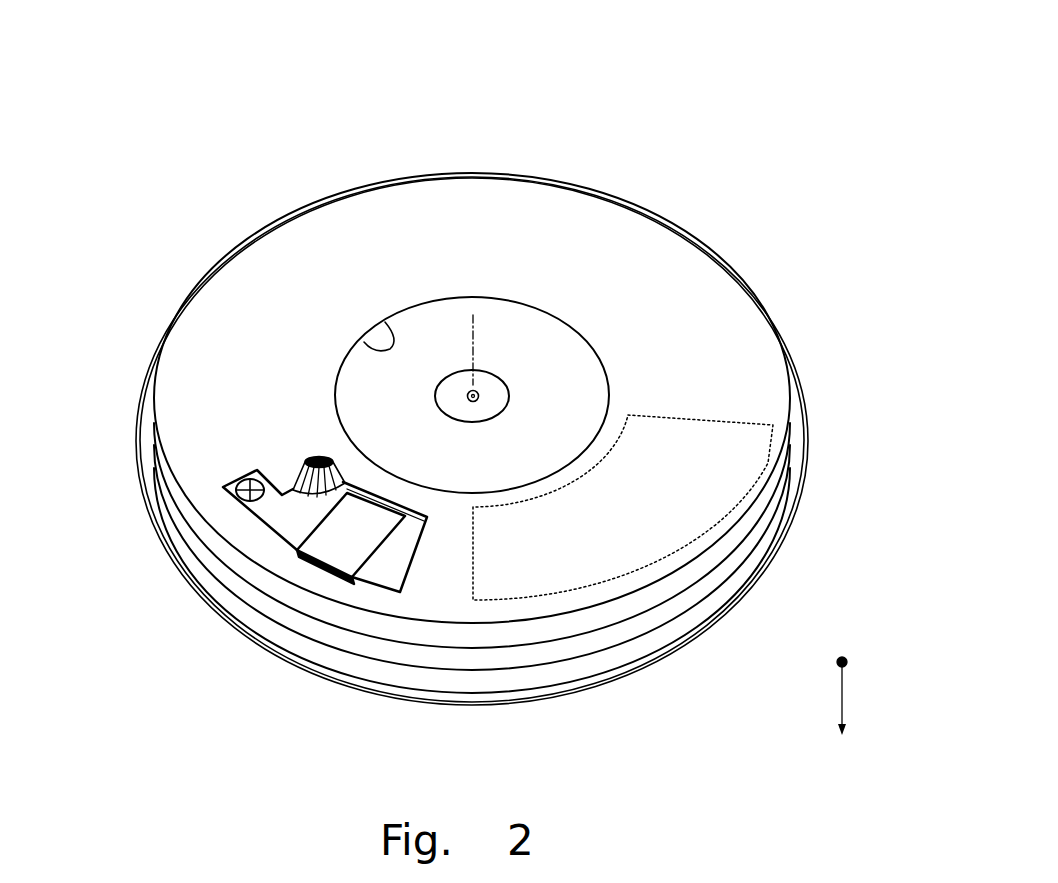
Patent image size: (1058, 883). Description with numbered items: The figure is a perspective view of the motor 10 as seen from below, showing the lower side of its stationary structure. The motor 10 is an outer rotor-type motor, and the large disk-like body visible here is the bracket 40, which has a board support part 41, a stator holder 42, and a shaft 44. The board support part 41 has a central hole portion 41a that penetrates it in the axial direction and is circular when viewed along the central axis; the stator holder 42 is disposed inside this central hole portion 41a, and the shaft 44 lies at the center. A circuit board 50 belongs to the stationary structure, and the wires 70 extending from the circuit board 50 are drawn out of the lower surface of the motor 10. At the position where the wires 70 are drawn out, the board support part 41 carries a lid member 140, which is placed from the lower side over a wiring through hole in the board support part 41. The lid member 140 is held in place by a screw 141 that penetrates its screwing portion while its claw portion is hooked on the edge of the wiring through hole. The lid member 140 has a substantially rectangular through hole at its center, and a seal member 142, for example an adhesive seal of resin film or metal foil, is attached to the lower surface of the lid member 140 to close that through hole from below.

The motor 10 is at (702, 118).
The bracket 40 is at (587, 176).
The board support part 41 is at (657, 257).
The central hole portion 41a is at (385, 322).
The stator holder 42 is at (423, 320).
The shaft 44 is at (490, 390).
The circuit board 50 is at (768, 463).
The wires 70 is at (290, 490).
The lid member 140 is at (390, 552).
The screw 141 is at (240, 483).
The seal member 142 is at (327, 542).